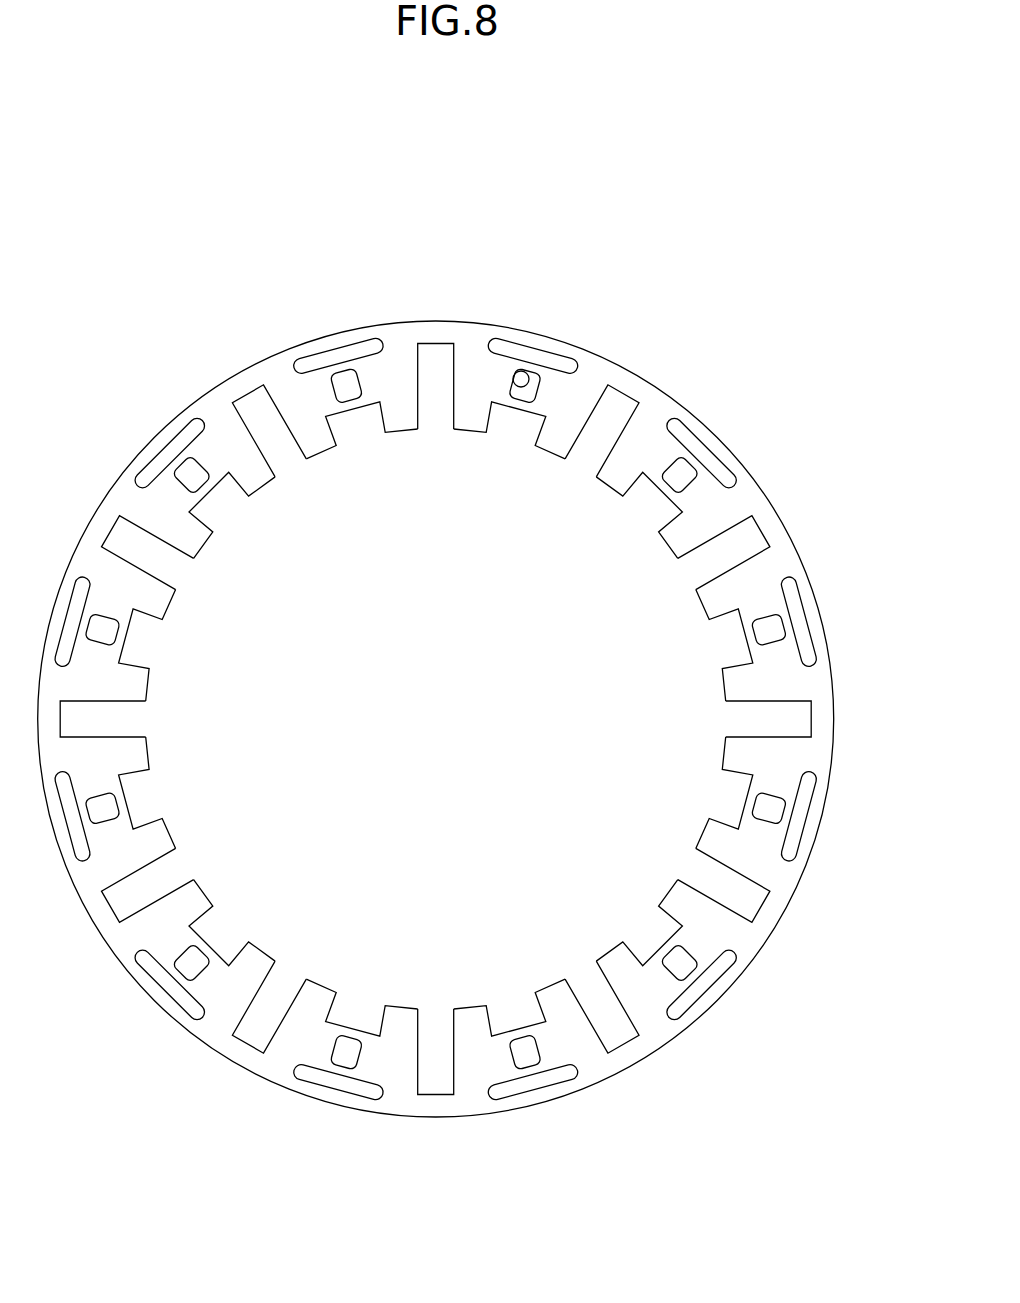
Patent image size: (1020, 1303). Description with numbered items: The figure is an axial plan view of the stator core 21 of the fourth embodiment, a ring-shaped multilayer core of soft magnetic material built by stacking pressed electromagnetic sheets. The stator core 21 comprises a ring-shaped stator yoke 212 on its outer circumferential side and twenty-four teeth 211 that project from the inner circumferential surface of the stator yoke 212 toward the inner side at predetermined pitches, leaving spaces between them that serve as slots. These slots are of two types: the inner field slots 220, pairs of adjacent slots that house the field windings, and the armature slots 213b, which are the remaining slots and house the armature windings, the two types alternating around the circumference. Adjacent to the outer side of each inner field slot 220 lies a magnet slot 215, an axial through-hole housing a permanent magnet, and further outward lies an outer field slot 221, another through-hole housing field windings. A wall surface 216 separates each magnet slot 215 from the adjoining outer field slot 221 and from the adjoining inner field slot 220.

The stator core 21 is at (661, 261).
The teeth 211 is at (555, 437).
The stator yoke 212 is at (236, 387).
The armature slot 213b is at (437, 355).
The magnet slot 215 is at (358, 378).
The wall surface 216 is at (524, 378).
The inner field slot 220 is at (358, 428).
The outer field slot 221 is at (336, 357).